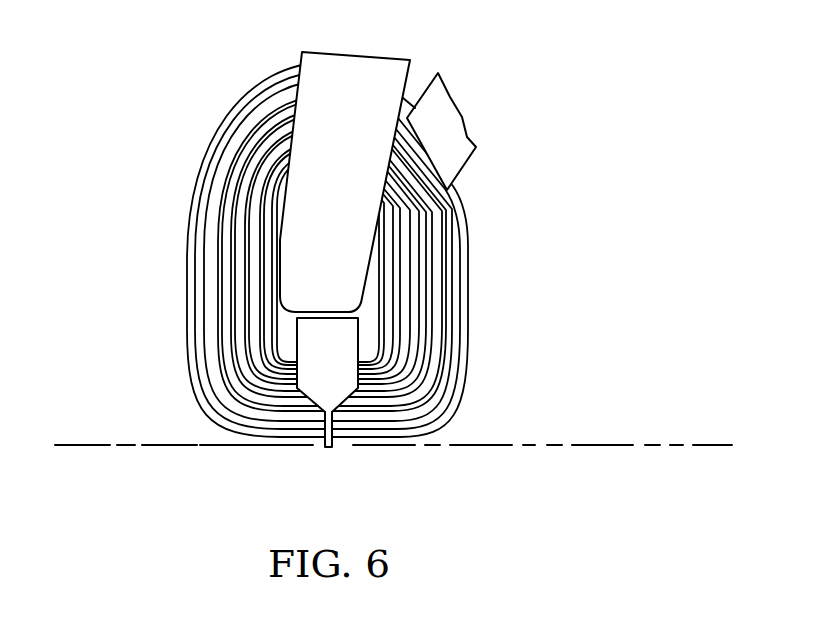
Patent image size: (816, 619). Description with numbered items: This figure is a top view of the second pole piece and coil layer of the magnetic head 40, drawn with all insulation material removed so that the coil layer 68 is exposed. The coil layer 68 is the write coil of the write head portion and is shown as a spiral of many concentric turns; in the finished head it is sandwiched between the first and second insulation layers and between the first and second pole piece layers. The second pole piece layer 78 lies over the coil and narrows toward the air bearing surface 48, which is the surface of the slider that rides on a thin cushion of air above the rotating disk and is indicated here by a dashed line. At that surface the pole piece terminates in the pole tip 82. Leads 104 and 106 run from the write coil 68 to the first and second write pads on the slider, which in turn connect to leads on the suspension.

The magnetic head 40 is at (417, 279).
The air bearing surface 48 is at (660, 448).
The coil layer 68 is at (440, 278).
The second pole piece layer 78 is at (345, 368).
The first pole tip 82 is at (327, 448).
The lead 104 is at (357, 180).
The lead 106 is at (450, 98).